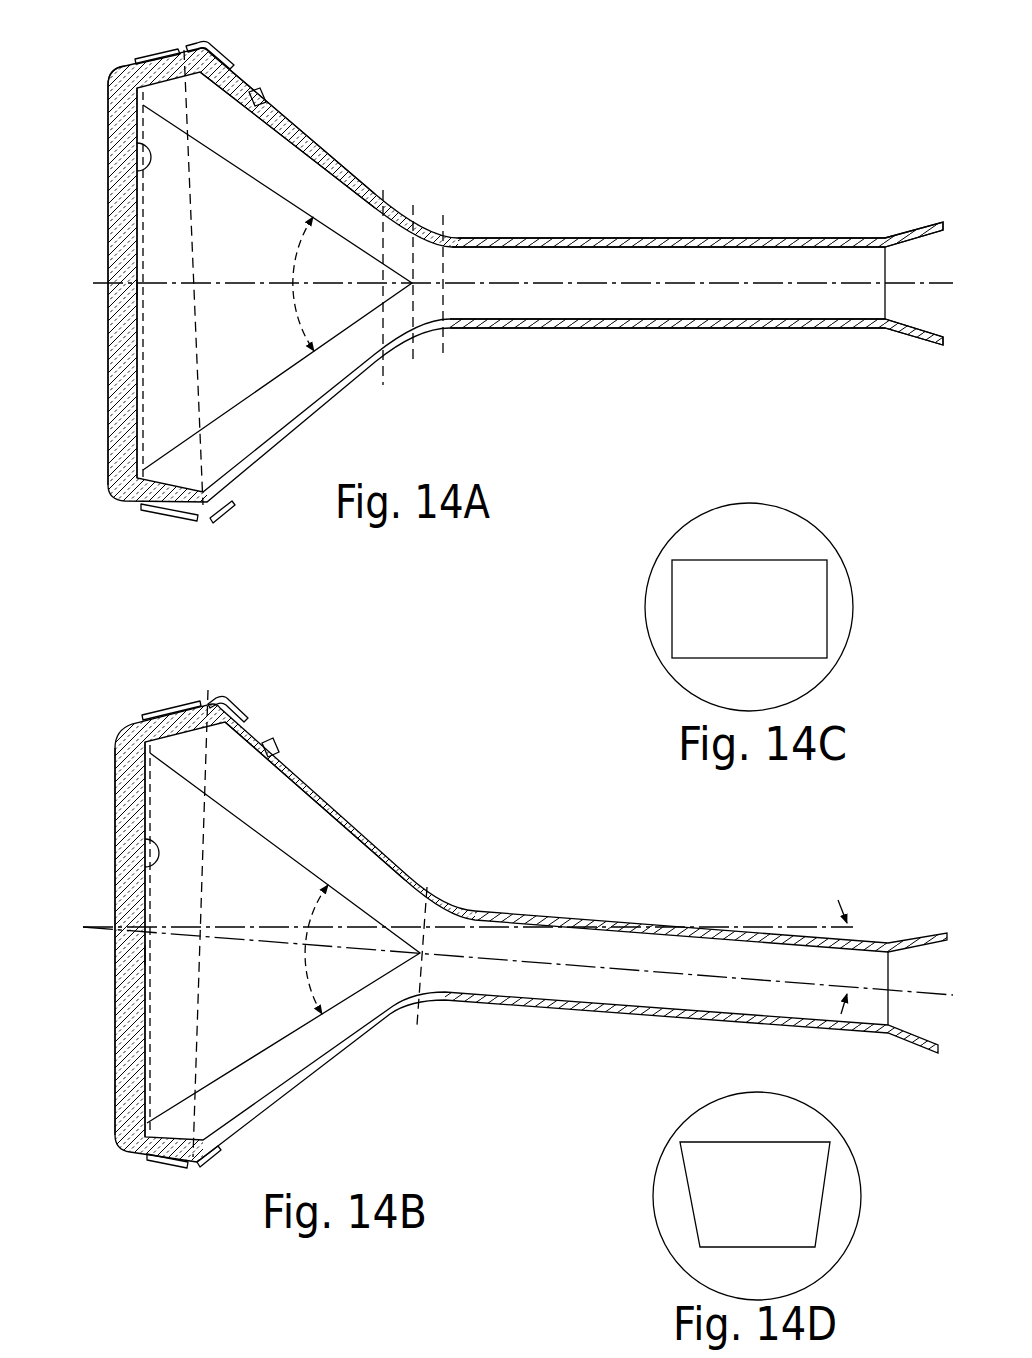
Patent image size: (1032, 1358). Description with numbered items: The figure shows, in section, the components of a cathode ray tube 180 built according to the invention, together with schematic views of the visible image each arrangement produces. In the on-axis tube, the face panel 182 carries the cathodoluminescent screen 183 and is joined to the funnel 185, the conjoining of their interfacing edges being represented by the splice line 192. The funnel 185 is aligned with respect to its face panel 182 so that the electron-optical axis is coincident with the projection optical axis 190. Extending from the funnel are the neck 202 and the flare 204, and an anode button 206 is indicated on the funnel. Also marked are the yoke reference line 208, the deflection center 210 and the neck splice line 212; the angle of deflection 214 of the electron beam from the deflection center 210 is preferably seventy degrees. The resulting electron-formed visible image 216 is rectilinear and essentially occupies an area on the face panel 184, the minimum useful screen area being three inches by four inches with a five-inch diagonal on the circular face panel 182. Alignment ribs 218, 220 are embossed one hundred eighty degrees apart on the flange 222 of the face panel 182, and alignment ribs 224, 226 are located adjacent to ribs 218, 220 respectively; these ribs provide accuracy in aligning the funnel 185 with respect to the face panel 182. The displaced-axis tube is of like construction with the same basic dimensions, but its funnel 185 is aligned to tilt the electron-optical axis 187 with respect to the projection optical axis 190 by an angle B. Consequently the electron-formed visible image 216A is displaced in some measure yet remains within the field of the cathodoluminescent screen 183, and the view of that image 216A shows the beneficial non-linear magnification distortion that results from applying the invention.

In FIG. 14A, the cathode ray tube 180 is at (432, 93).
In FIG. 14B, the cathode ray tube 180 is at (483, 845).
In FIG. 14A, the face panel 182 is at (108, 95).
In FIG. 14B, the face panel 182 is at (113, 748).
In FIG. 14A, the cathodoluminescent screen 183 is at (147, 165).
In FIG. 14B, the cathodoluminescent screen 183 is at (147, 866).
In FIG. 14C, the face panel 184 is at (695, 515).
In FIG. 14D, the face panel 184 is at (660, 1160).
In FIG. 14A, the funnel 185 is at (316, 146).
In FIG. 14B, the funnel 185 is at (353, 838).
In FIG. 14B, the electron-optical axis 187 is at (737, 980).
In FIG. 14A, the projection optical axis 190 is at (547, 283).
In FIG. 14B, the projection optical axis 190 is at (757, 925).
In FIG. 14A, the splice line 192 is at (198, 353).
In FIG. 14B, the splice line 192 is at (229, 923).
In FIG. 14A, the neck 202 is at (637, 240).
In FIG. 14A, the flare 204 is at (908, 232).
In FIG. 14A, the anode button 206 is at (264, 98).
In FIG. 14A, the yoke reference line 208 is at (386, 370).
In FIG. 14A, the deflection center 210 is at (413, 222).
In FIG. 14B, the deflection center 210 is at (418, 1007).
In FIG. 14A, the neck splice line 212 is at (444, 340).
In FIG. 14A, the angle of deflection 214 is at (293, 240).
In FIG. 14B, the angle of deflection 214 is at (315, 900).
In FIG. 14A, the electron-formed visible image 216 is at (136, 296).
In FIG. 14C, the electron-formed visible image 216 is at (768, 607).
In FIG. 14B, the electron-formed visible image 216A is at (129, 958).
In FIG. 14D, the electron-formed visible image 216A is at (787, 1192).
In FIG. 14A, the alignment rib 218 is at (148, 56).
In FIG. 14A, the alignment rib 220 is at (163, 519).
In FIG. 14A, the flange 222 is at (134, 63).
In FIG. 14A, the alignment rib 224 is at (218, 54).
In FIG. 14A, the alignment rib 226 is at (227, 519).